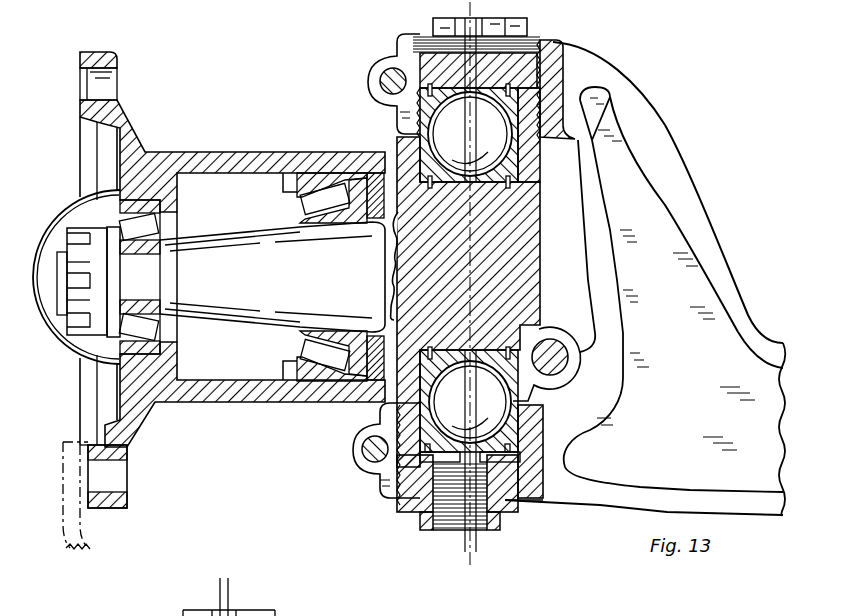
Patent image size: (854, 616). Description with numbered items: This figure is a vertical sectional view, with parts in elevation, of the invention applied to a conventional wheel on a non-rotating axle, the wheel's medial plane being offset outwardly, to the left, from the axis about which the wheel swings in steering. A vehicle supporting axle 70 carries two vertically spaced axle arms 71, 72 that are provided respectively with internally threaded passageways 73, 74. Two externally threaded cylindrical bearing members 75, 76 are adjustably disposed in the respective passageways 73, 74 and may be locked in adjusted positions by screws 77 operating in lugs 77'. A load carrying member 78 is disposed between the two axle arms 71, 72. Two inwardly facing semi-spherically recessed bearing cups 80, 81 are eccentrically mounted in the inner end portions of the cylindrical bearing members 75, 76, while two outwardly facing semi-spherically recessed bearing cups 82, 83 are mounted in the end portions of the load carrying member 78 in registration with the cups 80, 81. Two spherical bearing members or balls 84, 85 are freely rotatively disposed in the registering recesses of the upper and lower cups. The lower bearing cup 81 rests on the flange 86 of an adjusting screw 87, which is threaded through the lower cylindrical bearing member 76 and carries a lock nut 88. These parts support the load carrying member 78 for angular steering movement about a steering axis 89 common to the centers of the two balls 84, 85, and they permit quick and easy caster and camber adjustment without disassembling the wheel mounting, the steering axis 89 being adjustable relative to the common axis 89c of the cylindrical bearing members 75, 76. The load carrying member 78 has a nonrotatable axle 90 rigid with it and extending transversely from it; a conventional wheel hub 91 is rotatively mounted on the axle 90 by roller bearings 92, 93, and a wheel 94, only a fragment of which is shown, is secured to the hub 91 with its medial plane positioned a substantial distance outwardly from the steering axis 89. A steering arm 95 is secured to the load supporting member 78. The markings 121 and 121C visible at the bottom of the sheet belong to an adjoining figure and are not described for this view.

The vehicle supporting axle 70 is at (770, 383).
The axle arm 71 is at (590, 50).
The axle arm 72 is at (553, 500).
The internally threaded passageway 73 is at (546, 80).
The internally threaded passageway 74 is at (565, 449).
The externally threaded cylindrical bearing member 75 is at (408, 55).
The externally threaded cylindrical bearing member 76 is at (380, 488).
The screw 77 is at (360, 269).
The lug 77' is at (367, 266).
The load carrying member 78 is at (535, 288).
The bearing cup 80 is at (402, 110).
The bearing cup 81 is at (418, 420).
The bearing cup 82 is at (530, 183).
The bearing cup 83 is at (533, 332).
The spherical bearing member 84 is at (498, 143).
The spherical bearing member 85 is at (536, 410).
The flange 86 is at (543, 478).
The adjusting screw 87 is at (412, 504).
The lock nut 88 is at (430, 526).
The steering axis 89 is at (478, 548).
The common axis 89c is at (463, 548).
The nonrotatable axle 90 is at (252, 287).
The wheel hub 91 is at (245, 160).
The roller bearing 92 is at (144, 252).
The roller bearing 93 is at (323, 345).
The wheel 94 is at (70, 548).
The steering arm 95 is at (578, 350).
The fragment of adjacent figure 121 is at (218, 588).
The fragment of adjacent figure 121C is at (229, 588).